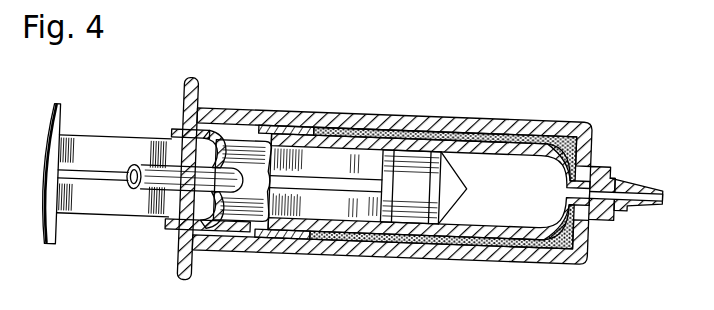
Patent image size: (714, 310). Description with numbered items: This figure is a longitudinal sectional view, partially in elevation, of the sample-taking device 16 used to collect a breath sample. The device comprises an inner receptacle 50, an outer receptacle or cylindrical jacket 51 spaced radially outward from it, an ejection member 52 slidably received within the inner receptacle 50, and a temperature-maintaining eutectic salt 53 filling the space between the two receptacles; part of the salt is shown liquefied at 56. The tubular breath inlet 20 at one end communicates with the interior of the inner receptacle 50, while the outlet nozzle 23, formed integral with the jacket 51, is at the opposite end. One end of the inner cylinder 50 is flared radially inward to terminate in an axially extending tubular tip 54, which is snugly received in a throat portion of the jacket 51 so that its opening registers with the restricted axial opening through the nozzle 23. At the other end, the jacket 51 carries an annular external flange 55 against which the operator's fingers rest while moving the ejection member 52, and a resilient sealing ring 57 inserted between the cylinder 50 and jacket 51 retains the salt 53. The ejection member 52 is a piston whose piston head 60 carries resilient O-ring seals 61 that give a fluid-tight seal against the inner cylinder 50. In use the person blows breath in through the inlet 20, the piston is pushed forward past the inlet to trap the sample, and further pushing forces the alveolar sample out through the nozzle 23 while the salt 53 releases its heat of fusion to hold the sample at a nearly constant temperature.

The sample-taking device 16 is at (392, 176).
The tubular breath inlet 20 is at (134, 190).
The outlet nozzle 23 is at (630, 183).
The inner receptacle 50 is at (262, 193).
The outer receptacle 51 is at (358, 258).
The ejection member 52 is at (90, 134).
The eutectic salt 53 is at (512, 257).
The tubular tip 54 is at (588, 168).
The external flange 55 is at (197, 82).
The liquefied temperature-maintaining material 56 is at (278, 128).
The resilient sealing ring 57 is at (257, 252).
The piston head 60 is at (413, 118).
The O-ring seals 61 is at (405, 133).